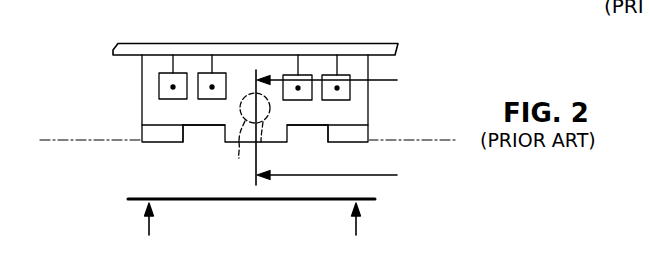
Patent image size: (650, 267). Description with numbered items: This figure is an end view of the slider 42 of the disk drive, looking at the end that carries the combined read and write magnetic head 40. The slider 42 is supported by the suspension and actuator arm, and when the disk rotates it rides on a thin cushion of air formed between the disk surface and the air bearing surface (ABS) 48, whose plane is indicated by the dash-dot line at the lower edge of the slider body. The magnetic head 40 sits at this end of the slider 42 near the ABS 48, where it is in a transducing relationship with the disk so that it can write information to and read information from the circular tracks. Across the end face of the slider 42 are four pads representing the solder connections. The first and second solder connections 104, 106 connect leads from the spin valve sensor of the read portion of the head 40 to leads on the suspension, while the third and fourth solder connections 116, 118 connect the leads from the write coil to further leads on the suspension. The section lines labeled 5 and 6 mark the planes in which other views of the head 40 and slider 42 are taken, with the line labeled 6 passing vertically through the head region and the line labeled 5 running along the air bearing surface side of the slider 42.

The slider 42 is at (142, 85).
The first solder connection 104 is at (162, 76).
The third solder connection 116 is at (200, 76).
The fourth solder connection 118 is at (285, 74).
The second solder connection 106 is at (323, 74).
The magnetic head 40 is at (238, 160).
The air bearing surface (ABS) 48 is at (65, 143).
The section line 6- 6 is at (335, 128).
The section line 5- 5 is at (251, 230).